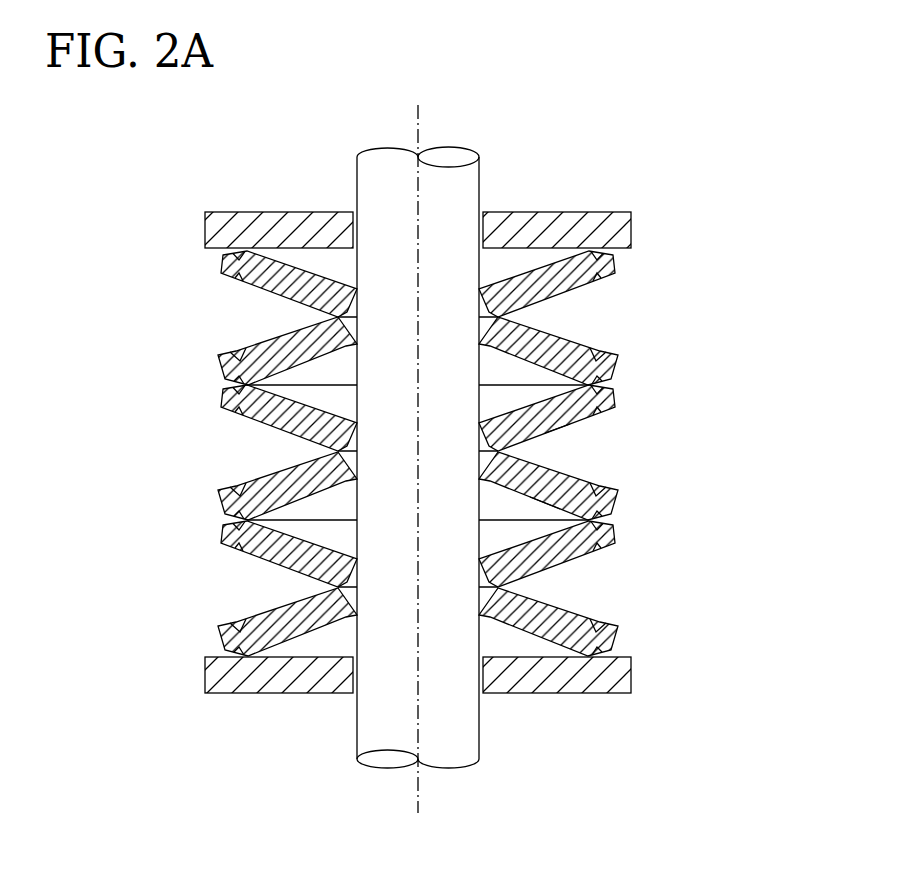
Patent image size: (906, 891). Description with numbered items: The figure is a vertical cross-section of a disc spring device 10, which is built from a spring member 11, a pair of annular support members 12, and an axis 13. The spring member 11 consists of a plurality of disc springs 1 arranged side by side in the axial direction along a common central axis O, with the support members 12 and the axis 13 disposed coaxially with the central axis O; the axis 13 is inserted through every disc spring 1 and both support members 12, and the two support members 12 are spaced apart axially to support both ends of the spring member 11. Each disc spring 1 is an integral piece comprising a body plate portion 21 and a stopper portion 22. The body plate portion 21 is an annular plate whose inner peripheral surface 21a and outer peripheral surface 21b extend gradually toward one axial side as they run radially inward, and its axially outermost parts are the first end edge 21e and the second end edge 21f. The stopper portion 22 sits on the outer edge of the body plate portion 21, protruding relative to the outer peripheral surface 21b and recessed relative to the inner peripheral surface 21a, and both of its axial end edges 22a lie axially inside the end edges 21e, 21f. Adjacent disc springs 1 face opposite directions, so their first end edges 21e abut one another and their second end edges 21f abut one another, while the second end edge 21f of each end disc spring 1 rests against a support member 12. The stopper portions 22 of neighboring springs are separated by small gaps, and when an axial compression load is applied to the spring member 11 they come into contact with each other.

The disc spring 1 is at (115, 435).
The disc spring device 10 is at (665, 176).
The spring member 11 is at (676, 394).
The support member 12 is at (592, 212).
The axis 13 is at (480, 172).
The central axis O is at (418, 115).
The body plate portion 21 is at (273, 477).
The inner peripheral surface 21a is at (534, 547).
The outer peripheral surface 21b is at (557, 473).
The first end edge 21e is at (338, 317).
The second end edge 21f is at (245, 251).
The stopper portion 22 is at (222, 492).
The axial end edge of stopper portion 22a is at (234, 277).